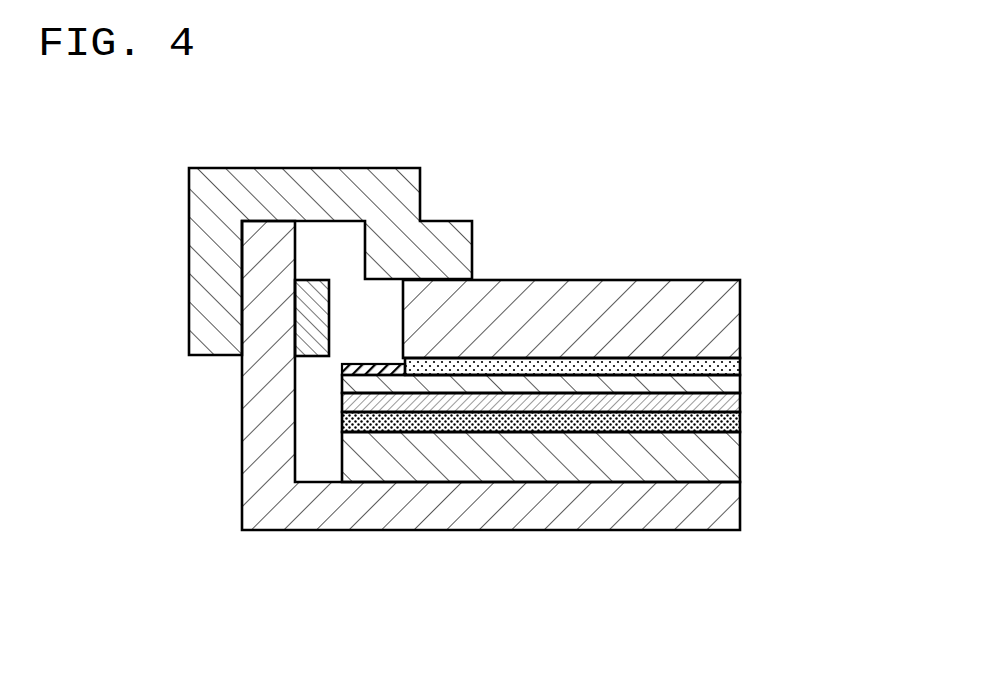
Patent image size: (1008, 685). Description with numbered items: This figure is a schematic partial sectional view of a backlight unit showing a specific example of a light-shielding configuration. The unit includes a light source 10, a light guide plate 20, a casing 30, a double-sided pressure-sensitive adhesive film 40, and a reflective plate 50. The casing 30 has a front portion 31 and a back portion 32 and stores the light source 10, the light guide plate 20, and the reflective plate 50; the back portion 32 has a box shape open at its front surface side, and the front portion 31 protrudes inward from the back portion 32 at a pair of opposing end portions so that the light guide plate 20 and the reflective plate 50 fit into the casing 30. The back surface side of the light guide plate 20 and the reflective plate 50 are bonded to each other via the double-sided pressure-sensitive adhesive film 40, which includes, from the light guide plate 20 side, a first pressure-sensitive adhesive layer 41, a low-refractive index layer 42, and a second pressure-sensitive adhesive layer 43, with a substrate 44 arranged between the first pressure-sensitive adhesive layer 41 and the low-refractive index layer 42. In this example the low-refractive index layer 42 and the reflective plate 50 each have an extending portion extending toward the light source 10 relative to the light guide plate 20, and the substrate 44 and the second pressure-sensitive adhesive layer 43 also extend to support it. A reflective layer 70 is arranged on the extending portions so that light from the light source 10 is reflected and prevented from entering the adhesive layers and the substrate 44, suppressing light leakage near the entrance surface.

The light source 10 is at (307, 337).
The light guide plate 20 is at (738, 318).
The casing 30 is at (115, 230).
The front portion 31 is at (190, 247).
The back portion 32 is at (247, 448).
The double-sided pressure-sensitive adhesive film 40 is at (827, 322).
The first pressure-sensitive adhesive layer 41 is at (738, 365).
The low-refractive index layer 42 is at (738, 403).
The second pressure-sensitive adhesive layer 43 is at (738, 423).
The substrate 44 is at (738, 383).
The reflective plate 50 is at (735, 460).
The reflective layer 70 is at (380, 368).